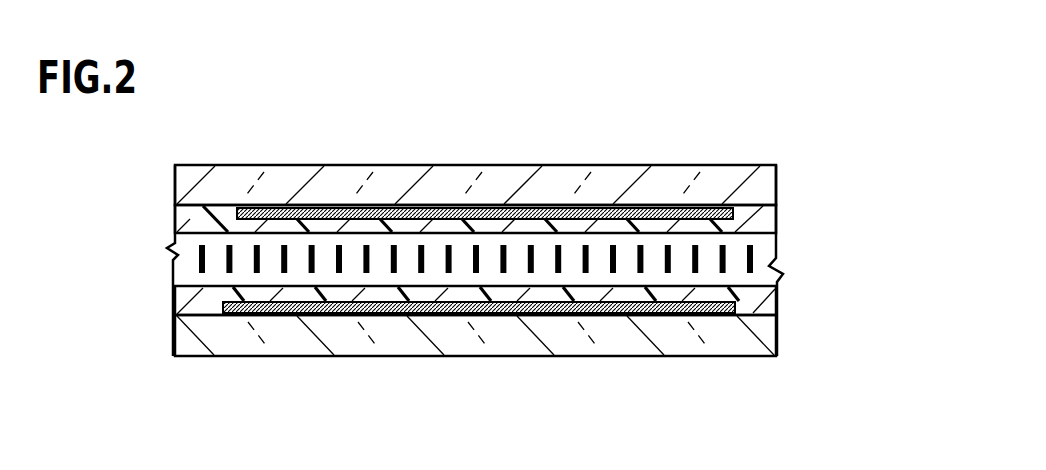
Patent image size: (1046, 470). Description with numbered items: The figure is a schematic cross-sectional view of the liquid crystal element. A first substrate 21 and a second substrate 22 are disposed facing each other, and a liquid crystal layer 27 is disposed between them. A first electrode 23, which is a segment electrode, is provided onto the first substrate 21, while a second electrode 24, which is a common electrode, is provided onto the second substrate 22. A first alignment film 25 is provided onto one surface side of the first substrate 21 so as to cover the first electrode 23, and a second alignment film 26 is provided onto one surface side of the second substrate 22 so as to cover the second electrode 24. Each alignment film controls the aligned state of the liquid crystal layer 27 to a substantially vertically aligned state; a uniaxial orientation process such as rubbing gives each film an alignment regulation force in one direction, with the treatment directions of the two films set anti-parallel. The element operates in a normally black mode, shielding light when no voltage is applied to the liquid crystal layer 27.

The first substrate 21 is at (768, 330).
The second substrate 22 is at (768, 190).
The first electrode 23 is at (665, 314).
The second electrode 24 is at (667, 217).
The first alignment film 25 is at (770, 288).
The second alignment film 26 is at (768, 227).
The liquid crystal layer 27 is at (768, 260).